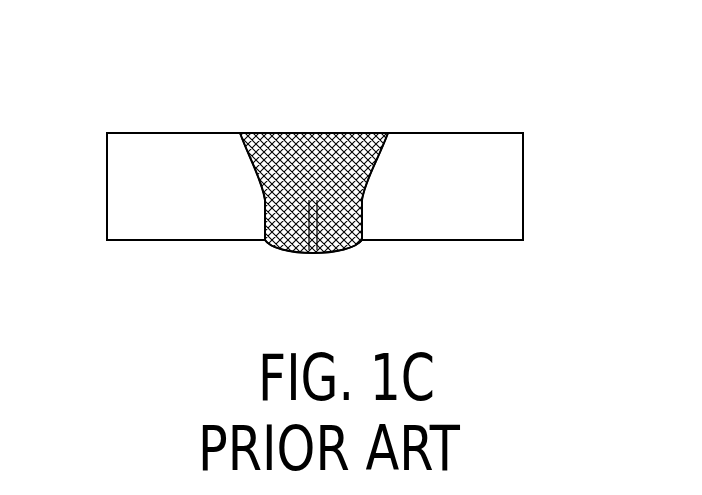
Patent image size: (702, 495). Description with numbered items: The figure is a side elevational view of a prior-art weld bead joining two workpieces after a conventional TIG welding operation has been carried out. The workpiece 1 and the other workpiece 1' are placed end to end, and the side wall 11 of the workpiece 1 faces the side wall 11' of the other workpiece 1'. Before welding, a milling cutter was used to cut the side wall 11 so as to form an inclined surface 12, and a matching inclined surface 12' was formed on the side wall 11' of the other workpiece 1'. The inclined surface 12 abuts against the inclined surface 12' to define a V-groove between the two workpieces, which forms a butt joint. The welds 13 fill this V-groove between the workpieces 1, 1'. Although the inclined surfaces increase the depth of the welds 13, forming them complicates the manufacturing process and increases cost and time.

The workpiece 1 is at (443, 160).
The another workpiece 1' is at (186, 160).
The side wall 11 is at (341, 277).
The side wall 11' is at (276, 282).
The inclined surface 12 is at (422, 137).
The inclined surface 12' is at (218, 224).
The welds 13 is at (318, 131).